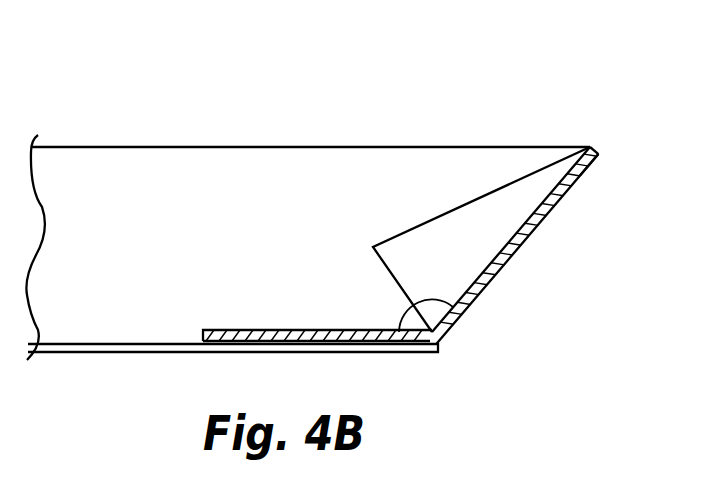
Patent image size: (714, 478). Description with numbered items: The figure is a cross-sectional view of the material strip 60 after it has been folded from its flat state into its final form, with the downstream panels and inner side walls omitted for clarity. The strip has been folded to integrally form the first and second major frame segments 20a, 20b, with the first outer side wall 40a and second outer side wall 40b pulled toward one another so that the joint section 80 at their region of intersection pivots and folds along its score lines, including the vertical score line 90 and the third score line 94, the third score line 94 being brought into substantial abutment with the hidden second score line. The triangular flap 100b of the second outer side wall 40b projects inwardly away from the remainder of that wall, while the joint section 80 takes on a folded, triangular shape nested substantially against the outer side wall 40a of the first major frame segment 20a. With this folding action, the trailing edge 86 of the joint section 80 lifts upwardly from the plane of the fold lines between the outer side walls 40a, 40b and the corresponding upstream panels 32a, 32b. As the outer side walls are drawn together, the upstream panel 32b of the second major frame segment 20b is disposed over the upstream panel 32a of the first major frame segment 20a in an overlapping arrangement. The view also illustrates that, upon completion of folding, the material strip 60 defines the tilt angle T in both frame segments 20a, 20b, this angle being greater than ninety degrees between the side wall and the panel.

The first major frame segment 20a is at (52, 138).
The second major frame segment 20b is at (588, 204).
The first outer side wall 40a is at (130, 186).
The second outer side wall 40b is at (495, 281).
The first upstream panel 32a is at (75, 346).
The second upstream panel 32b is at (275, 329).
The material strip 60 is at (388, 64).
The joint section 80 is at (560, 145).
The trailing edge 86 is at (377, 257).
The vertical score line 90 is at (466, 201).
The third score line 94 is at (535, 210).
The triangular flap 100b is at (503, 227).
The tilt angle T is at (417, 320).